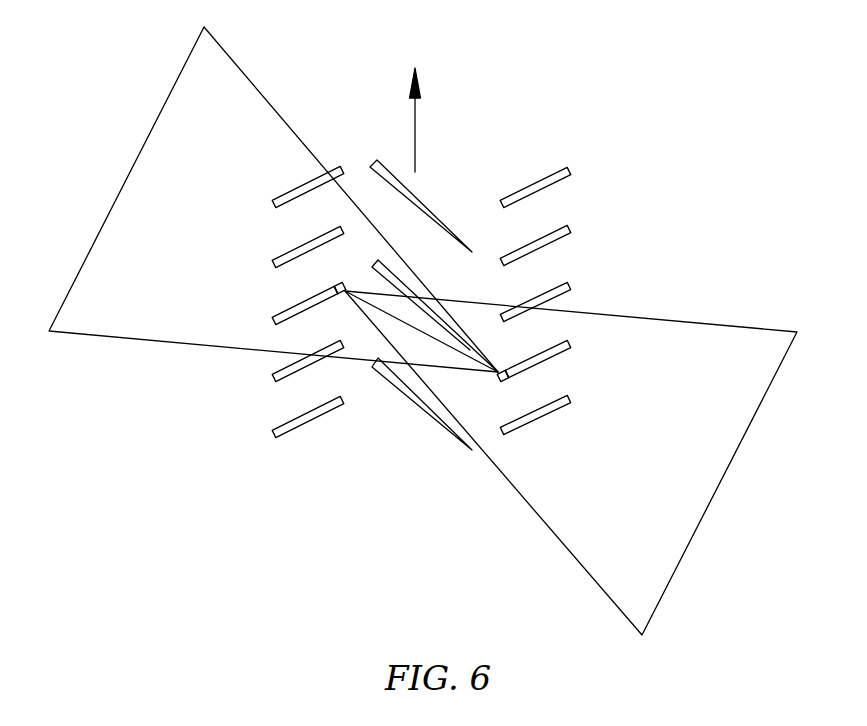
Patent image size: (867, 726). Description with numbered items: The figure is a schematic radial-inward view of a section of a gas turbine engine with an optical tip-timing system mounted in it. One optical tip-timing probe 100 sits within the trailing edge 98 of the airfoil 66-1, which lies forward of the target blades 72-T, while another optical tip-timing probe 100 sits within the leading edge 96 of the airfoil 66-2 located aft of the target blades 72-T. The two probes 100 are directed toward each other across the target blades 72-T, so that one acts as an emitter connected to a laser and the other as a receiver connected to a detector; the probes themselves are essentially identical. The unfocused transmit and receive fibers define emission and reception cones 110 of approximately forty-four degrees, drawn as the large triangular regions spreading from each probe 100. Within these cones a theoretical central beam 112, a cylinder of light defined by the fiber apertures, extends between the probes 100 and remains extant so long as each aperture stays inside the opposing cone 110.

The emission and reception cones 110 is at (282, 118).
The airfoil 66-1 is at (278, 311).
The airfoil 66-2 is at (564, 351).
The optical tip-timing probe 100 is at (342, 286).
The trailing edge 98 is at (343, 296).
The leading edge 96 is at (500, 382).
The target blades 72-T is at (425, 203).
The beam 112 is at (425, 334).